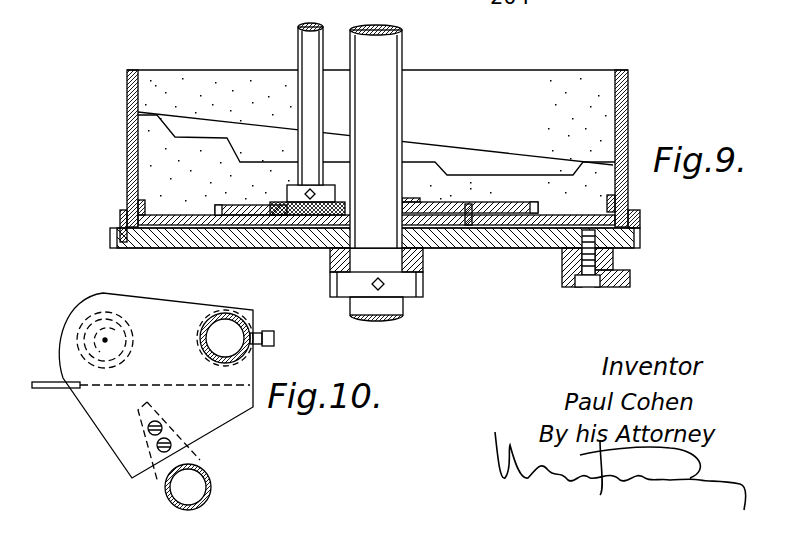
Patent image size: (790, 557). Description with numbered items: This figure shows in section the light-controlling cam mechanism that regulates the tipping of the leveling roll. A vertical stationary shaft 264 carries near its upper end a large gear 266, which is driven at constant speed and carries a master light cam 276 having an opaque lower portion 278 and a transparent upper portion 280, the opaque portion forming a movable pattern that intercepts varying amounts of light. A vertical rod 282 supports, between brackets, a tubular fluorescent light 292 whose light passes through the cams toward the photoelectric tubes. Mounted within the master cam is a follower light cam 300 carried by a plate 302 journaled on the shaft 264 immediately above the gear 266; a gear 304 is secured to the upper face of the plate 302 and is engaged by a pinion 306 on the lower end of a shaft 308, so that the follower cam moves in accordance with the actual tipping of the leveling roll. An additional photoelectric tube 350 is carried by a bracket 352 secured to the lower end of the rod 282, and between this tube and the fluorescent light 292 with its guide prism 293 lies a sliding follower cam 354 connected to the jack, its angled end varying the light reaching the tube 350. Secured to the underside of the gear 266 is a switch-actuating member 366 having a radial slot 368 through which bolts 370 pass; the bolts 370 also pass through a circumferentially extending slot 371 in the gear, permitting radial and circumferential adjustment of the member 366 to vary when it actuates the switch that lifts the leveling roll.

In FIG. 9, the vertical stationary shaft 264 is at (403, 55).
In FIG. 9, the large gear 266 is at (642, 232).
In FIG. 9, the master light cam 276 is at (128, 100).
In FIG. 9, the opaque lower portion 278 is at (160, 136).
In FIG. 9, the transparent upper portion 280 is at (227, 128).
In FIG. 10, the vertical rod 282 is at (231, 320).
In FIG. 10, the tubular fluorescent light 292 is at (212, 484).
In FIG. 10, the Lucite guide prism 293 is at (194, 456).
In FIG. 9, the follower light cam 300 is at (136, 71).
In FIG. 9, the plate 302 is at (555, 214).
In FIG. 9, the gear 304 is at (486, 207).
In FIG. 9, the pinion 306 is at (284, 202).
In FIG. 9, the shaft 308 is at (299, 50).
In FIG. 10, the additional photoelectric tube 350 is at (92, 315).
In FIG. 10, the bracket 352 is at (145, 308).
In FIG. 10, the follower cam 354 is at (62, 392).
In FIG. 9, the switch-actuating member 366 is at (632, 275).
In FIG. 9, the radial slot 368 is at (578, 282).
In FIG. 9, the bolt 370 is at (586, 266).
In FIG. 9, the circumferentially extending slot 371 is at (634, 225).